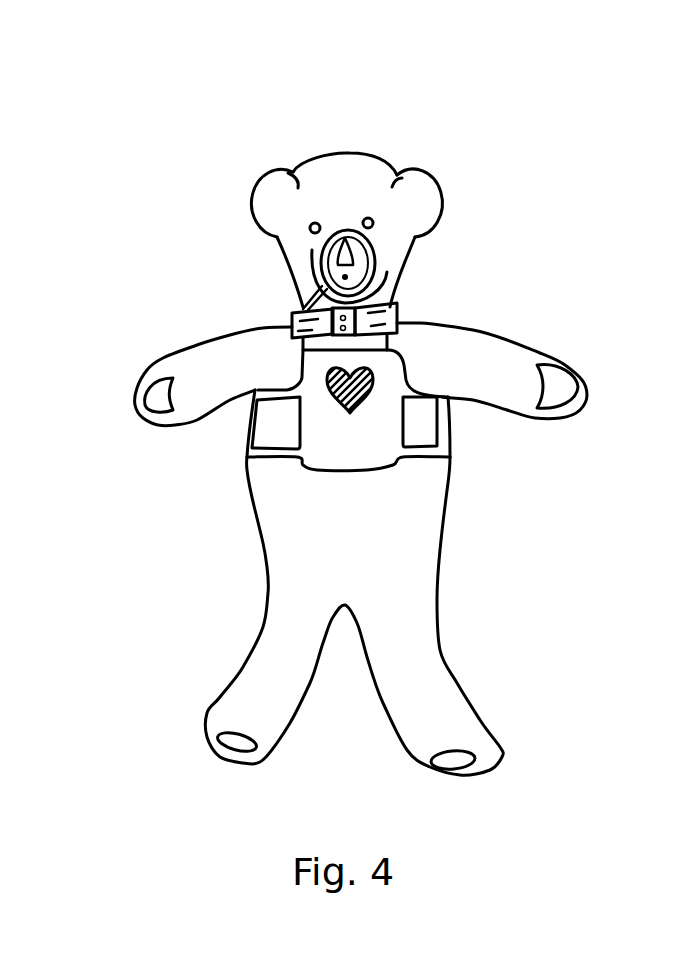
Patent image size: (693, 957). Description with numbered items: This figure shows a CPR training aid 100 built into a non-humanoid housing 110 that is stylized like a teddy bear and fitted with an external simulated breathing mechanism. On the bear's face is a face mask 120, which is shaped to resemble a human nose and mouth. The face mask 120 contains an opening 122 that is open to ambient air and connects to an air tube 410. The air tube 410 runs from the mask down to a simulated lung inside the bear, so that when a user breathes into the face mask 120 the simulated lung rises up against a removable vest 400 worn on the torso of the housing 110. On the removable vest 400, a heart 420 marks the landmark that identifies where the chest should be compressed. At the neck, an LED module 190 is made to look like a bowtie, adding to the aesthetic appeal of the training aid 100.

The CPR training aid 100 is at (232, 118).
The non-humanoid housing 110 is at (370, 542).
The face mask 120 is at (318, 252).
The opening 122 is at (348, 277).
The LED module 190 is at (378, 310).
The removable vest 400 is at (345, 427).
The air tube 410 is at (297, 289).
The heart 420 is at (331, 394).